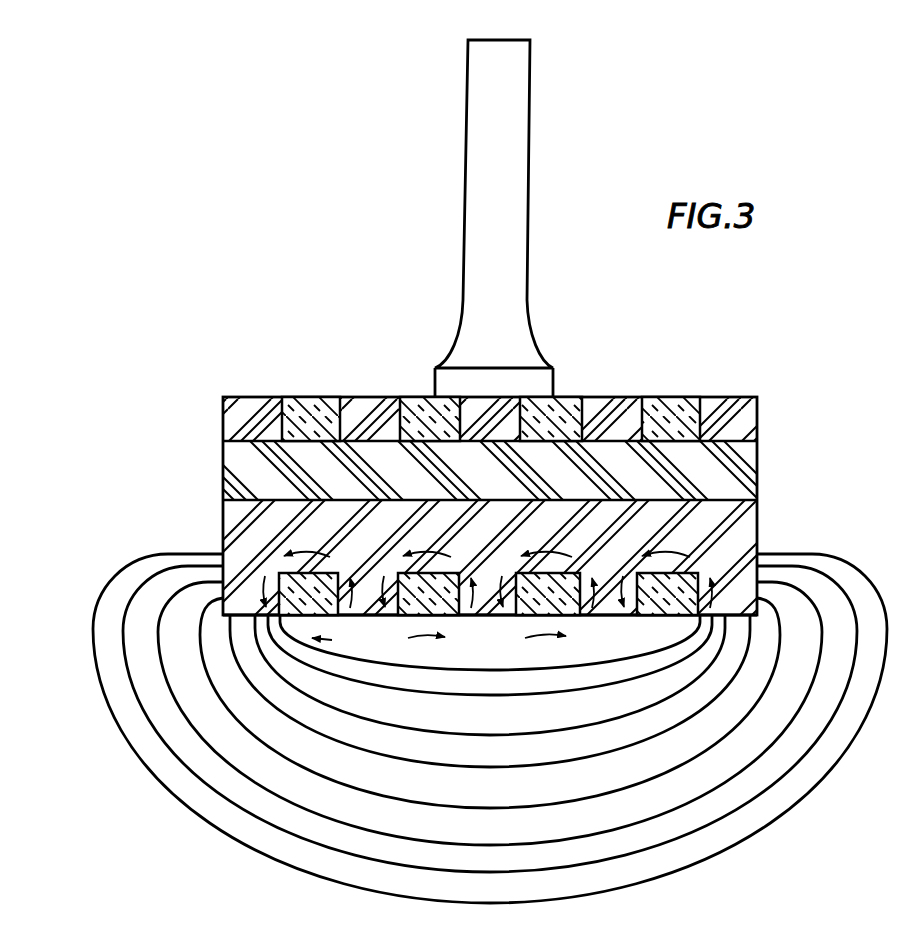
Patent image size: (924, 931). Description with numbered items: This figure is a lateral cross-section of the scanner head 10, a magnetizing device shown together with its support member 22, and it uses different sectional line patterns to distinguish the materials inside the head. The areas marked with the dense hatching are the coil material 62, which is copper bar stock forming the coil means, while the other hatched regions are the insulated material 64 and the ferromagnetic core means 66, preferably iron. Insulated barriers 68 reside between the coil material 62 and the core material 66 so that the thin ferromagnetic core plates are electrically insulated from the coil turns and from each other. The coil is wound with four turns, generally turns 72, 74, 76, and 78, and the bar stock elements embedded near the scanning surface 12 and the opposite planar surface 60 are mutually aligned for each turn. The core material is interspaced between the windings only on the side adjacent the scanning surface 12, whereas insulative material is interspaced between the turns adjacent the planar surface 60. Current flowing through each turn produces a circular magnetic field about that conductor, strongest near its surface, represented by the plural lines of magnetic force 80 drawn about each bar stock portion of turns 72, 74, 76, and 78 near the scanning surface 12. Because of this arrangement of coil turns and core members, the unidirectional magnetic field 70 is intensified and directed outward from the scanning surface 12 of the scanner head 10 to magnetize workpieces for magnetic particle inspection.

The scanner head 10 is at (814, 455).
The scanning surface 12 is at (508, 615).
The support member 22 is at (512, 194).
The planar surface 60 is at (728, 397).
The coil material 62 is at (298, 410).
The insulated material 64 is at (253, 470).
The ferromagnetic core means 66 is at (277, 532).
The insulated barriers 68 is at (267, 573).
The magnetic field 70 is at (838, 782).
The first turn 72 is at (320, 397).
The second turn 74 is at (418, 397).
The third turn 76 is at (568, 397).
The fourth turn 78 is at (677, 397).
The lines of magnetic force 80 is at (383, 582).